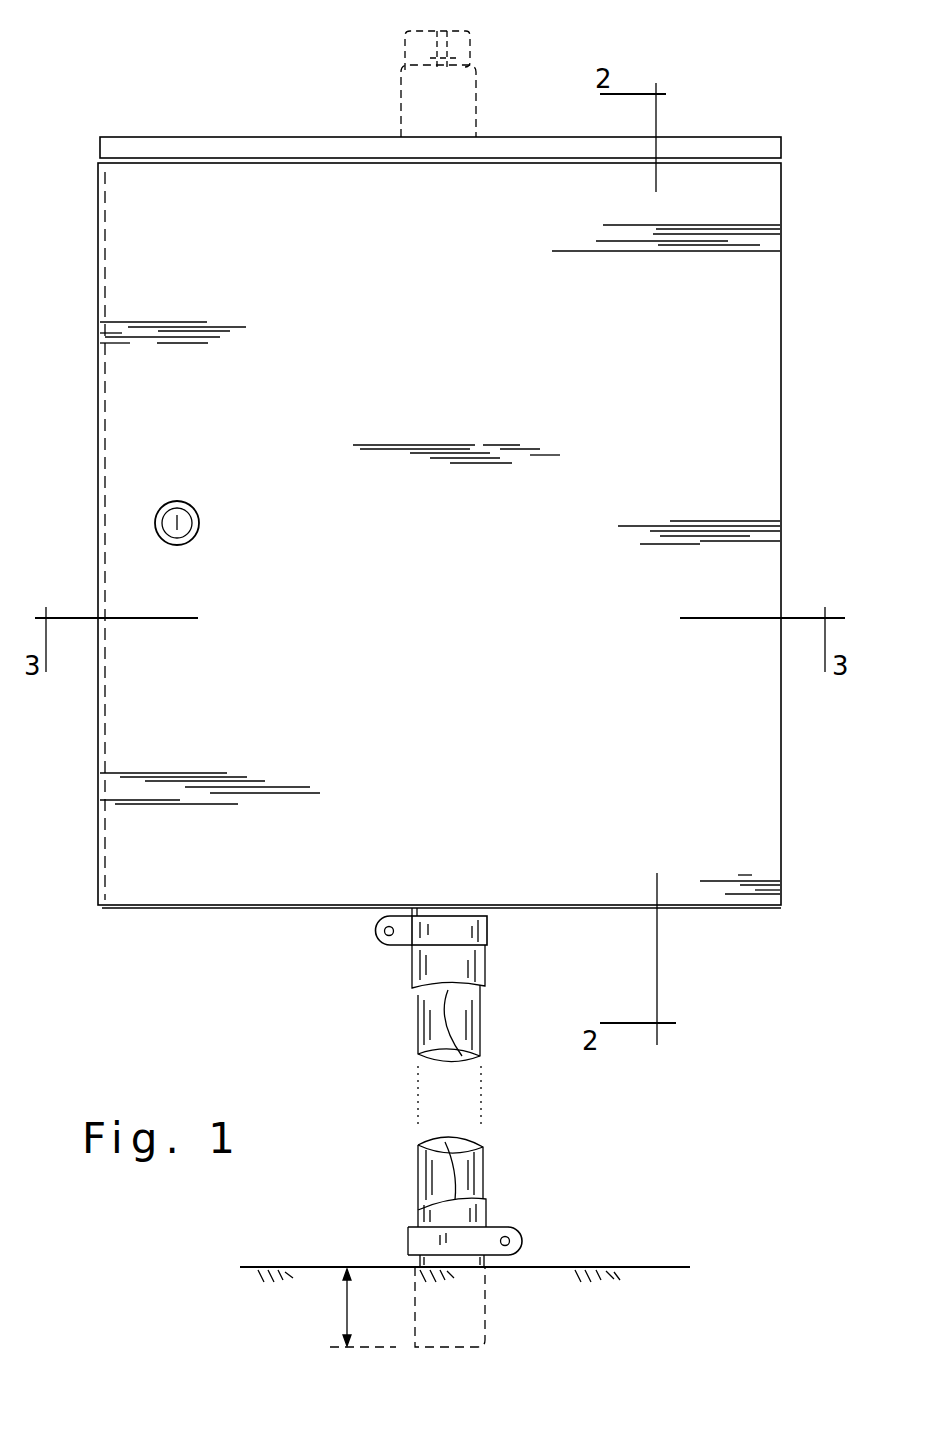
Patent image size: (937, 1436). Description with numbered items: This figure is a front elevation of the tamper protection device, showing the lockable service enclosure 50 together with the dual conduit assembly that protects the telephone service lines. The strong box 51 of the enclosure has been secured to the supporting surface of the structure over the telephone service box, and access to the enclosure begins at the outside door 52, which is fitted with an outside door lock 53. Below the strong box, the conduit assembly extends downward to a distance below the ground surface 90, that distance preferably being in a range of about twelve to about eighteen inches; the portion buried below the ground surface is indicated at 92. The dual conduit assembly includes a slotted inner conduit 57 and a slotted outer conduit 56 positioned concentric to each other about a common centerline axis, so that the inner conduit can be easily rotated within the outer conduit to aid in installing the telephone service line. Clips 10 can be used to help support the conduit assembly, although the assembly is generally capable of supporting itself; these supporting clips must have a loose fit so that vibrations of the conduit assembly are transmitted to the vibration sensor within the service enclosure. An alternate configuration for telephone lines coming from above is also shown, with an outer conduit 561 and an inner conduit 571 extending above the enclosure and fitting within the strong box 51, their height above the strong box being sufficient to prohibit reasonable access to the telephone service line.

The clips 10 is at (400, 946).
The lockable service enclosure 50 is at (704, 120).
The strong box 51 is at (246, 138).
The outside door 52 is at (640, 769).
The outside door lock 53 is at (164, 522).
The slotted outer conduit 56 is at (487, 953).
The slotted inner conduit 57 is at (480, 1017).
The outer conduit 561 is at (476, 99).
The inner conduit 571 is at (468, 43).
The ground surface 90 is at (560, 1267).
The buried post end 92 is at (484, 1336).